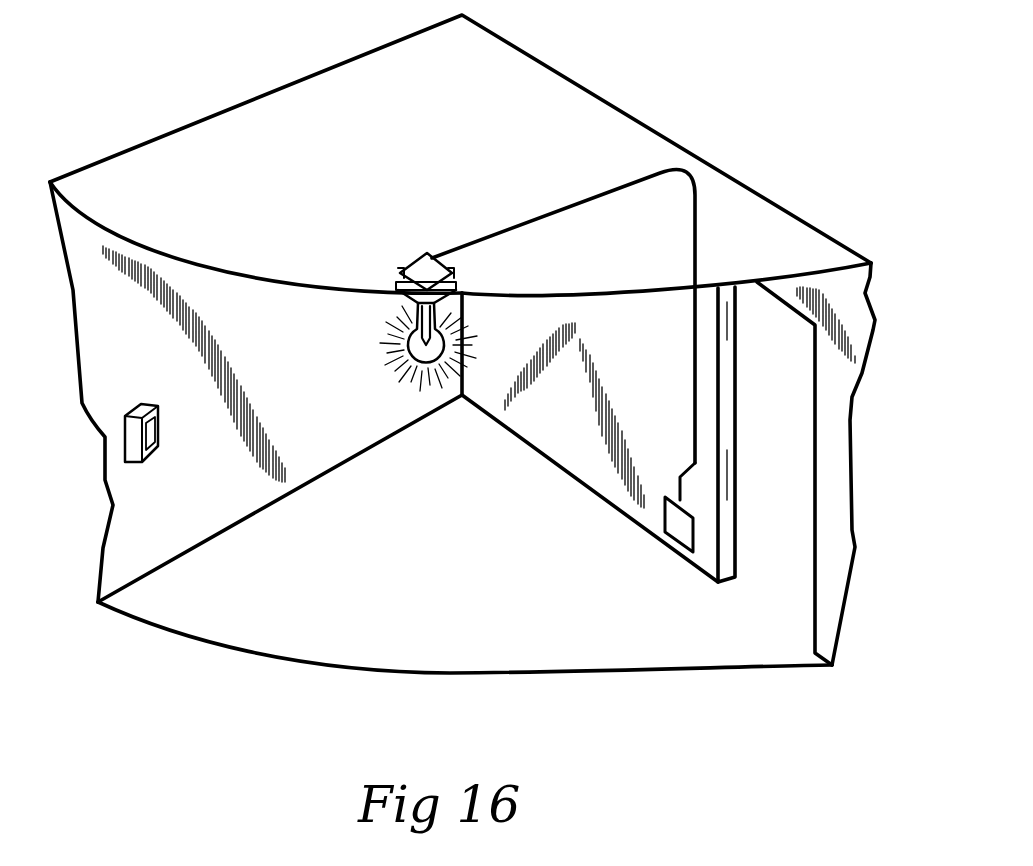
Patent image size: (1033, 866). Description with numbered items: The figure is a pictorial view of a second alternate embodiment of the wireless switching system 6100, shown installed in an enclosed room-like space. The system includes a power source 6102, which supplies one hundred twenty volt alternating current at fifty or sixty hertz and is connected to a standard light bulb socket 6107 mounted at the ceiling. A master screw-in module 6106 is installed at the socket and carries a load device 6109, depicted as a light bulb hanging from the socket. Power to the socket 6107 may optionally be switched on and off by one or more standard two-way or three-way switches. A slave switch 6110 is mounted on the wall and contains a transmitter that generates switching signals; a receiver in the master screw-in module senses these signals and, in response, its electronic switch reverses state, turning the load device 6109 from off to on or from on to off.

The wireless switching system 6100 is at (626, 101).
The power source 6102 is at (665, 540).
The master screw-in module 6106 is at (396, 286).
The standard light bulb socket 6107 is at (428, 252).
The load device 6109 is at (400, 340).
The slave switch 6110 is at (160, 428).